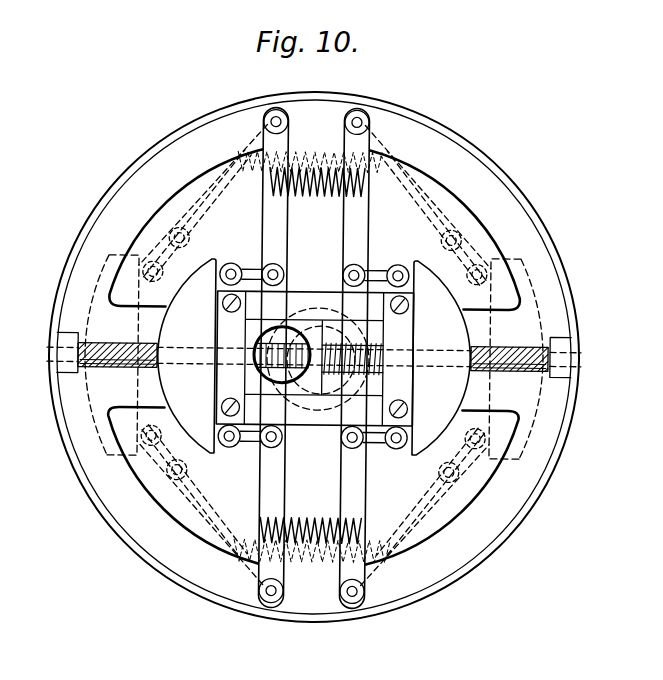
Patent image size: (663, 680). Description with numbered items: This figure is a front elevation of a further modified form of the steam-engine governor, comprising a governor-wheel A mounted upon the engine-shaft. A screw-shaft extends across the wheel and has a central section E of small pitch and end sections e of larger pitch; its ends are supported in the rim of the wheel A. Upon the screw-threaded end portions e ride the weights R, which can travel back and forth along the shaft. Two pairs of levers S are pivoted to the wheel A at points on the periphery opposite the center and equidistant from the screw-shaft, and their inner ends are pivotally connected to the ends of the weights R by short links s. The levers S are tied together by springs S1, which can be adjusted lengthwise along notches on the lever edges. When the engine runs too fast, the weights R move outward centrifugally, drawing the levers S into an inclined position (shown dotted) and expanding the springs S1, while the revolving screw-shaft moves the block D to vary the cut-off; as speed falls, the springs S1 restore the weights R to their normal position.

The governor-wheel A is at (314, 357).
The end sections of the screw-shaft e is at (107, 348).
The weights R is at (314, 356).
The block D is at (262, 325).
The central section of the screw-shaft E is at (350, 367).
The short links s is at (250, 270).
The levers S is at (286, 238).
The springs S1 is at (332, 165).